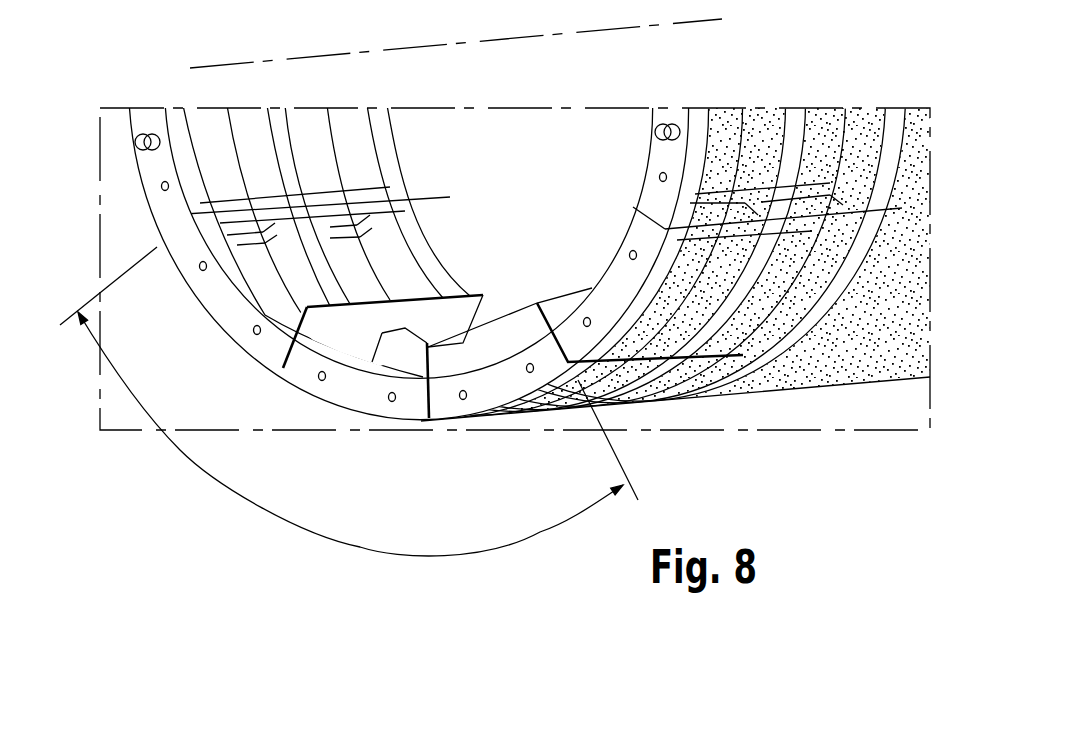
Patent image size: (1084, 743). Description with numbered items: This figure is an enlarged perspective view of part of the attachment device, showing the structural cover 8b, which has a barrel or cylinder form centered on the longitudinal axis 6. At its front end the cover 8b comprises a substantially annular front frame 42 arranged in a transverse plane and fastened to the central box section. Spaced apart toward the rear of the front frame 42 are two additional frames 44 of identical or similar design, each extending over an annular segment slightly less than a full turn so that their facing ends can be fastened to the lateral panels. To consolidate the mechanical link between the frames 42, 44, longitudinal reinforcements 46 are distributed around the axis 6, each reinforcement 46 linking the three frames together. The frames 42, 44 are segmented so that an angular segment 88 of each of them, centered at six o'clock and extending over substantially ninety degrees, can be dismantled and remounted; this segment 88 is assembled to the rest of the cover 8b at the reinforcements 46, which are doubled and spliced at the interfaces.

The longitudinal axis 6 is at (620, 27).
The structural cover 8b is at (328, 424).
The front frame 42 is at (607, 337).
The additional frames 44 is at (723, 312).
The longitudinal reinforcements 46 is at (228, 206).
The angular segment 88 is at (273, 518).